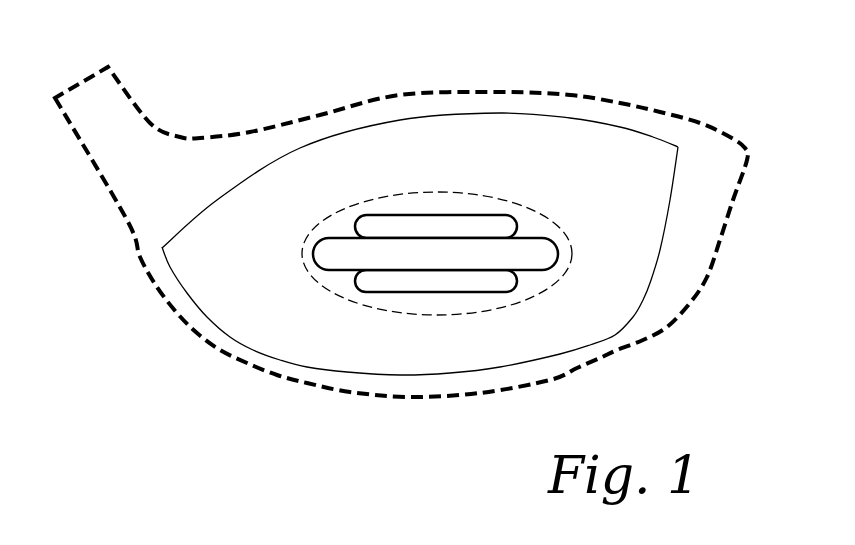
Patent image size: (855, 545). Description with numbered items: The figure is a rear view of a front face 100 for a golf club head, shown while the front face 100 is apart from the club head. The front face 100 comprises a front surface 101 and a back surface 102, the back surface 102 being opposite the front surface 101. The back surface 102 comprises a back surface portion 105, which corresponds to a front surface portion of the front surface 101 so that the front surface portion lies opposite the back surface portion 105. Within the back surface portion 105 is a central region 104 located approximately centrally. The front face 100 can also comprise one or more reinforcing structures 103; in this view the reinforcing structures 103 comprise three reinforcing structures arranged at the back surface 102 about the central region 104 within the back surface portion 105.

The front face 100 is at (602, 66).
The front surface 101 is at (397, 120).
The back surface 102 is at (587, 316).
The reinforcing structures 103 is at (347, 228).
The central region 104 is at (441, 249).
The back surface portion 105 is at (527, 227).